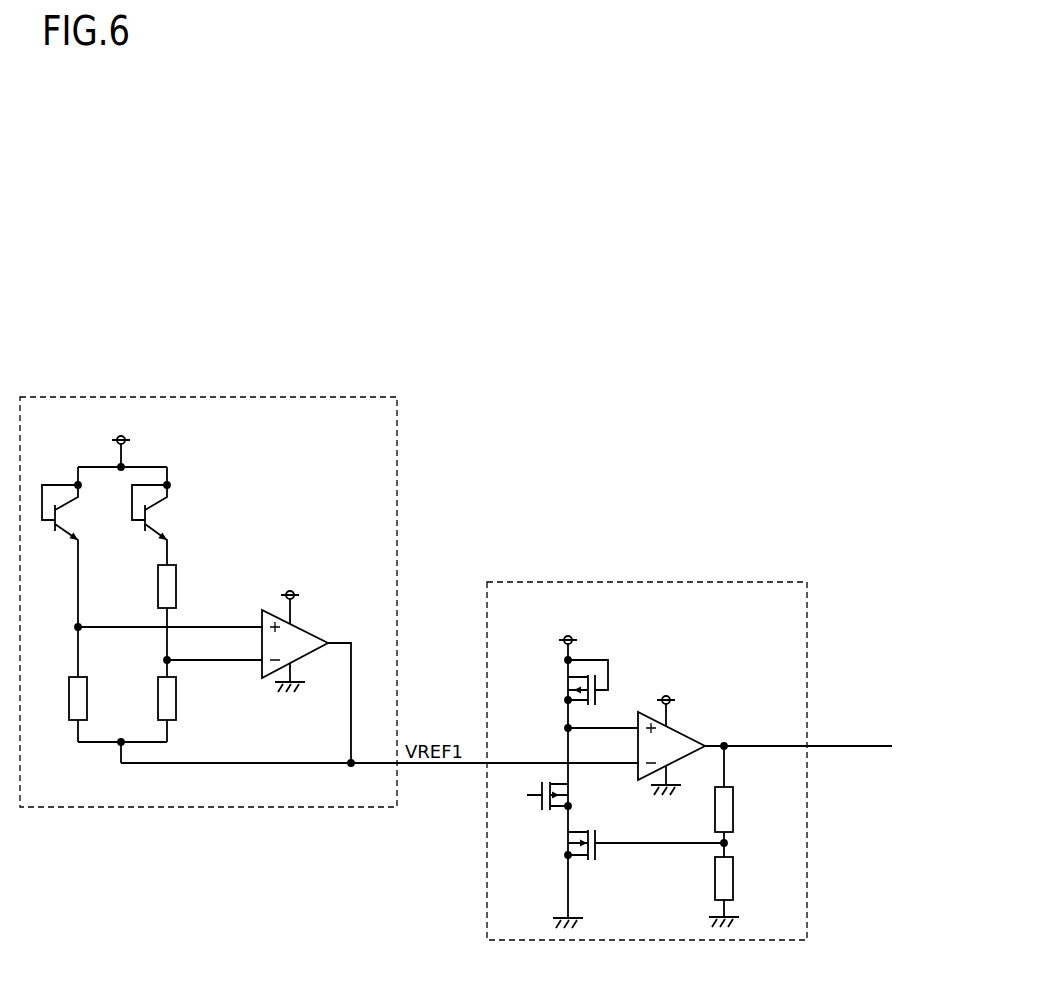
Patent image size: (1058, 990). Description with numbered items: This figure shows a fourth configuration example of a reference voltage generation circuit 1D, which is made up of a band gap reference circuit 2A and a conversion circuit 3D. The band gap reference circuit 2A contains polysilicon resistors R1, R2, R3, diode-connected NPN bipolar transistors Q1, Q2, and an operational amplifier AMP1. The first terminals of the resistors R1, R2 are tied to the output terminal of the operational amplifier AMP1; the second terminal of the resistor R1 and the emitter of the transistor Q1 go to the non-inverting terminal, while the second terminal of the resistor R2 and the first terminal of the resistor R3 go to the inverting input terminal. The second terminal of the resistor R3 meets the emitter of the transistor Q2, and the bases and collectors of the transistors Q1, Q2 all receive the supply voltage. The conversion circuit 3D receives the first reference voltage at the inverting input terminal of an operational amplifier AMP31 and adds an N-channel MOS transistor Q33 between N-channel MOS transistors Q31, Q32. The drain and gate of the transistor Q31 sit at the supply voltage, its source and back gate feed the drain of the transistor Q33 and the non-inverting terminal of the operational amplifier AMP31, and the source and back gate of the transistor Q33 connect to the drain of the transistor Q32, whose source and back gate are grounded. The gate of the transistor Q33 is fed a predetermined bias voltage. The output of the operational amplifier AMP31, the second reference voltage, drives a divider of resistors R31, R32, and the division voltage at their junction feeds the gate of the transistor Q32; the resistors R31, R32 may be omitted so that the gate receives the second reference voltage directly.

The reference voltage generation circuit 1D is at (488, 307).
The band gap reference circuit 2A is at (208, 397).
The conversion circuit 3D is at (645, 582).
The NPN bipolar transistor Q1 is at (79, 519).
The NPN bipolar transistor Q2 is at (168, 519).
The resistor R1 is at (87, 698).
The resistor R2 is at (176, 698).
The resistor R3 is at (176, 586).
The operational amplifier AMP1 is at (316, 629).
The N-channel MOS transistor Q31 is at (563, 690).
The N-channel MOS transistor Q32 is at (563, 845).
The N-channel MOS transistor Q33 is at (572, 795).
The operational amplifier AMP31 is at (692, 731).
The resistor R31 is at (733, 810).
The resistor R32 is at (733, 880).